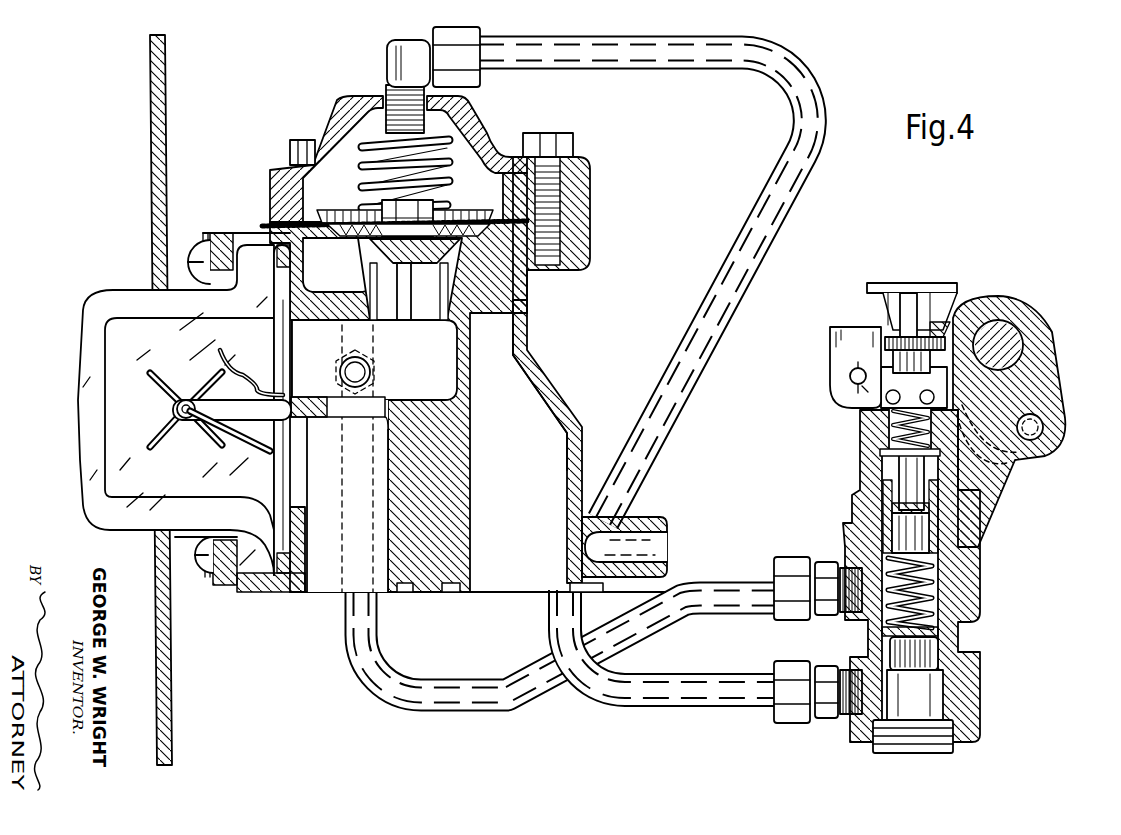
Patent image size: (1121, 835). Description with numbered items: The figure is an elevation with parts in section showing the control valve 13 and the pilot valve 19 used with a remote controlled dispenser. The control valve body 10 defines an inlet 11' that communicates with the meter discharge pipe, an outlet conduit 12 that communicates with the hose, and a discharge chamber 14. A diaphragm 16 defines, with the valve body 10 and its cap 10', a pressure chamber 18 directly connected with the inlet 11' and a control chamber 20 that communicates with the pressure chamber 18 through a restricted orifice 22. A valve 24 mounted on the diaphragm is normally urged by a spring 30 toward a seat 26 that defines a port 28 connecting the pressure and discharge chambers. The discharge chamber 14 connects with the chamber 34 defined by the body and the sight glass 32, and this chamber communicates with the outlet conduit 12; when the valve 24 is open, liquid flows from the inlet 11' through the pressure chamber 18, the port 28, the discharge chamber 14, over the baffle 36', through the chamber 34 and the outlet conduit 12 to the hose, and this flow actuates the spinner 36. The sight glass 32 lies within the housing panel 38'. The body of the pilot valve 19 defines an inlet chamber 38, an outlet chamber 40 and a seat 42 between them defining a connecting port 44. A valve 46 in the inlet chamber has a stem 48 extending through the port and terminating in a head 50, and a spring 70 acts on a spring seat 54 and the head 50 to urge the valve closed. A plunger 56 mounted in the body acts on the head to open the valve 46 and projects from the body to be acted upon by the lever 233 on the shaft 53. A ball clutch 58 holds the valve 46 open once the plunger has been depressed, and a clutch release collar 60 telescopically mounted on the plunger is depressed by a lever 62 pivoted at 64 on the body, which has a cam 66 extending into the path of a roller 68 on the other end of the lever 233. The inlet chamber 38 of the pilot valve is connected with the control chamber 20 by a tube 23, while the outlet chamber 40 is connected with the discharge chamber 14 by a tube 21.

The control valve body 10 is at (467, 374).
The cap 10' is at (399, 159).
The inlet 11' is at (512, 605).
The outlet conduit 12 is at (318, 591).
The control valve 13 is at (537, 360).
The discharge chamber 14 is at (402, 367).
The diaphragm 16 is at (394, 234).
The pressure chamber 18 is at (317, 275).
The pilot valve 19 is at (1014, 297).
The control chamber 20 is at (465, 201).
The tube 21 is at (756, 606).
The restricted orifice 22 is at (347, 238).
The tube 23 is at (588, 71).
The valve 24 is at (456, 260).
The seat 26 is at (450, 244).
The port 28 is at (368, 271).
The spring 30 is at (391, 174).
The sight glass 32 is at (80, 404).
The chamber 34 is at (177, 379).
The spinner 36 is at (200, 431).
The baffle 36' is at (245, 359).
The inlet chamber 38 is at (913, 724).
The housing panel 38' is at (142, 400).
The outlet chamber 40 is at (950, 628).
The seat 42 is at (940, 652).
The connecting port 44 is at (870, 636).
The valve 46 is at (915, 695).
The stem 48 is at (932, 562).
The head 50 is at (930, 525).
The shaft 53 is at (1018, 346).
The spring seat 54 is at (876, 634).
The plunger 56 is at (899, 470).
The ball clutch 58 is at (880, 411).
The clutch release collar 60 is at (962, 312).
The lever 62 is at (848, 350).
The pivot 64 is at (850, 378).
The cam 66 is at (995, 468).
The roller 68 is at (1045, 427).
The spring 70 is at (935, 582).
The lever 233 is at (880, 283).